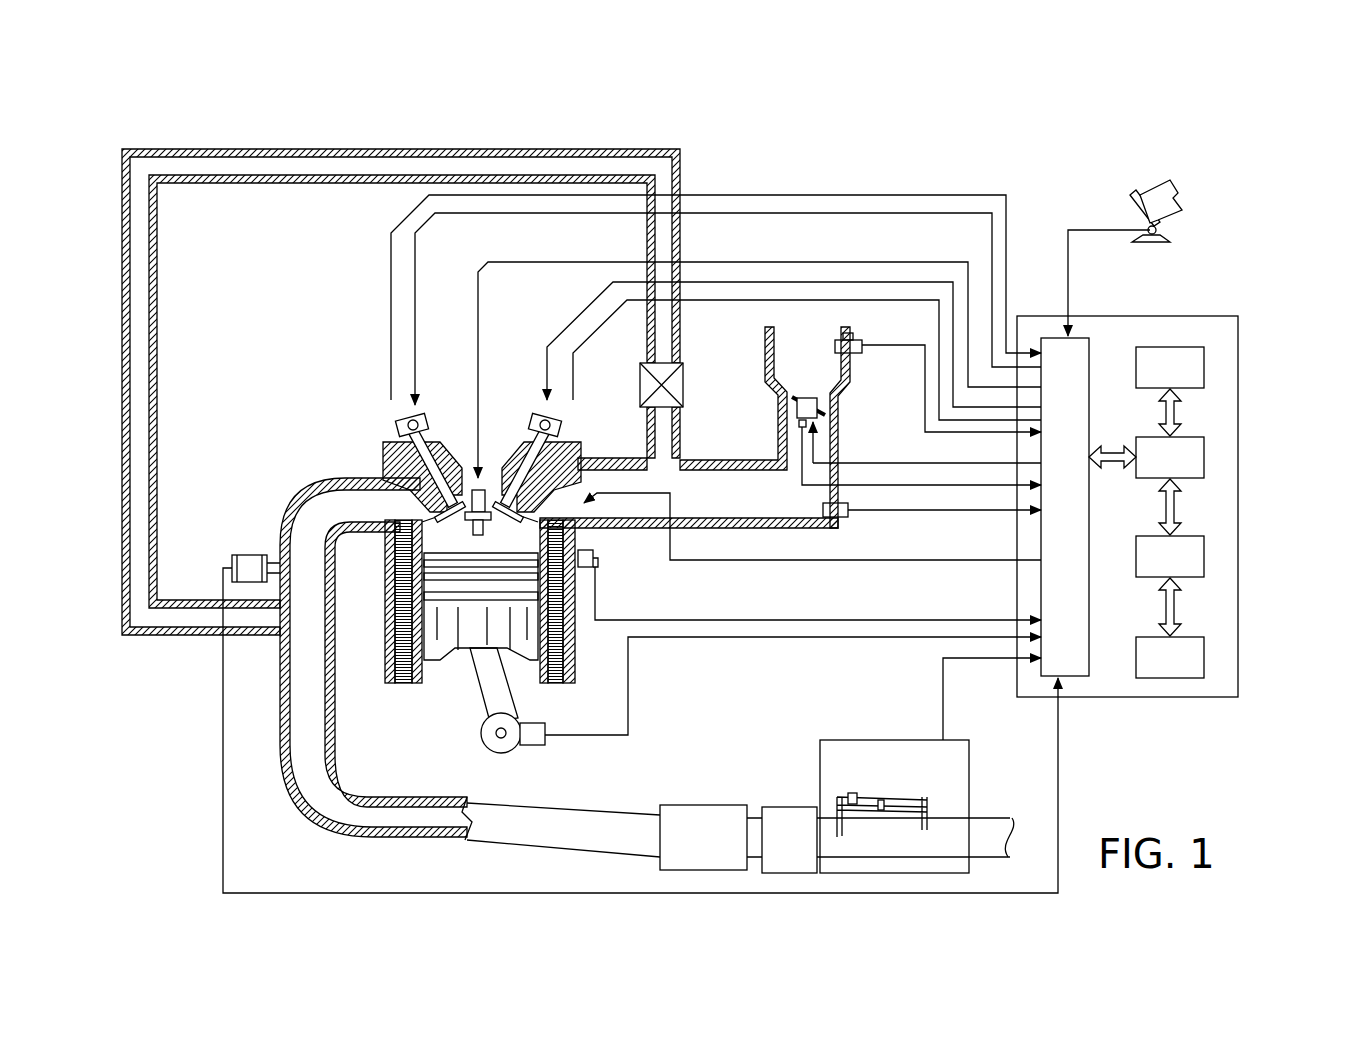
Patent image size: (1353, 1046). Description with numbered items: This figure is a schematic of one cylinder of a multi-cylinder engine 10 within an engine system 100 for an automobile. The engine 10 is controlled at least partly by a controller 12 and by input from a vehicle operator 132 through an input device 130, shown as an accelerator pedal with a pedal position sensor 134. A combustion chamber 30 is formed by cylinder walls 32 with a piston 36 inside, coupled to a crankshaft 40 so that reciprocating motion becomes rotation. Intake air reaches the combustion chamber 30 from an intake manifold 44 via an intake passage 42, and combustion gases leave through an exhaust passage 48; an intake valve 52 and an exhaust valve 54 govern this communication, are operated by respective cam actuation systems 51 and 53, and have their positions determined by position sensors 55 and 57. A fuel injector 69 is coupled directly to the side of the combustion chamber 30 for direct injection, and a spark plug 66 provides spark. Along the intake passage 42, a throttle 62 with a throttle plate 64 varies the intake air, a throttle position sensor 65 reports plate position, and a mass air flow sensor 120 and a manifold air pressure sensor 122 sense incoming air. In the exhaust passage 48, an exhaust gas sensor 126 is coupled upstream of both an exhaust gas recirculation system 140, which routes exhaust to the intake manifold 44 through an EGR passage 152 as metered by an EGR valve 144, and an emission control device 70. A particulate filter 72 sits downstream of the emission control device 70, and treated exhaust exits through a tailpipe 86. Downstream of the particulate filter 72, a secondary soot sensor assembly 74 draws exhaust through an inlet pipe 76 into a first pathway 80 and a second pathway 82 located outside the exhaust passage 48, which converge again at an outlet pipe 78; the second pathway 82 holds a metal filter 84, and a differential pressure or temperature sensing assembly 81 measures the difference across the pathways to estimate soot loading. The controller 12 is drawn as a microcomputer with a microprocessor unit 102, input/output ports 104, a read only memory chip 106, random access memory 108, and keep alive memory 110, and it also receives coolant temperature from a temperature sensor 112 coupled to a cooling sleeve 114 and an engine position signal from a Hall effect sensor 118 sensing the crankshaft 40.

The engine 10 is at (318, 393).
The controller 12 is at (1240, 316).
The combustion chamber 30 is at (396, 632).
The cylinder walls 32 is at (415, 700).
The piston 36 is at (462, 637).
The crankshaft 40 is at (490, 750).
The intake passage 42 is at (817, 371).
The intake manifold 44 is at (753, 504).
The exhaust passage 48 is at (363, 512).
The cam actuation system 51 is at (528, 400).
The intake valve 52 is at (767, 494).
The cam actuation system 53 is at (432, 400).
The exhaust valve 54 is at (425, 472).
The position sensor 55 is at (560, 424).
The position sensor 57 is at (403, 418).
The throttle 62 is at (824, 406).
The throttle plate 64 is at (792, 402).
The throttle position sensor 65 is at (798, 425).
The spark plug 66 is at (484, 470).
The fuel injector 69 is at (580, 540).
The emission control device 70 is at (715, 849).
The particulate filter 72 is at (802, 851).
The secondary soot sensor assembly 74 is at (852, 740).
The inlet pipe 76 is at (843, 828).
The outlet pipe 78 is at (926, 826).
The first pathway 80 is at (883, 815).
The differential pressure or temperature sensing assembly 81 is at (882, 800).
The second pathway 82 is at (915, 797).
The metal filter 84 is at (853, 793).
The tailpipe 86 is at (1008, 818).
The engine system 100 is at (1275, 120).
The microprocessor unit 102 is at (1205, 455).
The input/output ports 104 is at (1092, 345).
The read only memory chip 106 is at (1205, 363).
The random access memory 108 is at (1205, 555).
The keep alive memory 110 is at (1205, 655).
The temperature sensor 112 is at (588, 570).
The cooling sleeve 114 is at (560, 648).
The Hall effect sensor 118 is at (535, 748).
The mass air flow sensor 120 is at (856, 338).
The manifold air pressure sensor 122 is at (845, 518).
The exhaust gas sensor 126 is at (232, 562).
The input device 130 is at (1130, 200).
The vehicle operator 132 is at (1180, 196).
The pedal position sensor 134 is at (1163, 232).
The exhaust gas recirculation system 140 is at (548, 133).
The EGR valve 144 is at (683, 390).
The EGR passage 152 is at (397, 150).